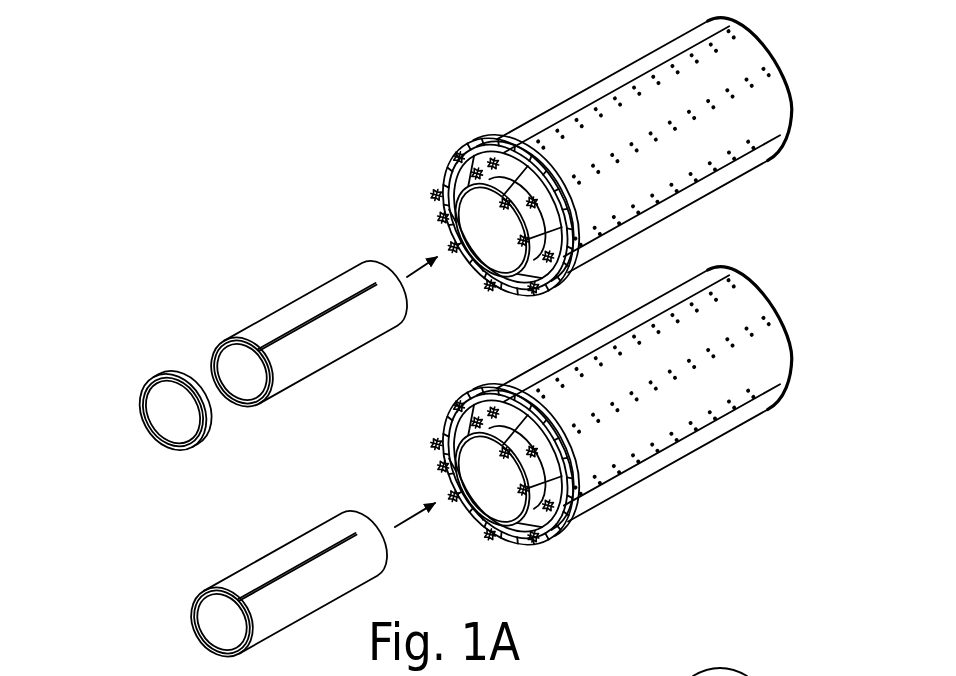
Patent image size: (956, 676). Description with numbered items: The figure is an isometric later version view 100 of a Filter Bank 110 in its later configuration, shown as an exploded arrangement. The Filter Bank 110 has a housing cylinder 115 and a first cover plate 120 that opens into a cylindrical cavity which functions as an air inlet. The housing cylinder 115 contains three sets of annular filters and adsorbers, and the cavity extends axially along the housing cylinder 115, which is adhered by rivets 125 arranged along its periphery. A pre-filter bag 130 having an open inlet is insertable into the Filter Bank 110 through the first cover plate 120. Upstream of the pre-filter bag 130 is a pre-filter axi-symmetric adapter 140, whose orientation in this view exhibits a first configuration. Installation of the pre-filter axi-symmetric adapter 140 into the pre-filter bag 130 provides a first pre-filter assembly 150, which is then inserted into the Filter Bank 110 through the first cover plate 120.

The later version view 100 is at (126, 142).
The Filter Bank 110 is at (820, 387).
The housing cylinder 115 is at (771, 303).
The first cover plate 120 is at (463, 393).
The rivets 125 is at (653, 135).
The pre-filter bag 130 is at (273, 310).
The pre-filter axi-symmetric adapter 140 is at (158, 372).
The first pre-filter assembly 150 is at (363, 498).